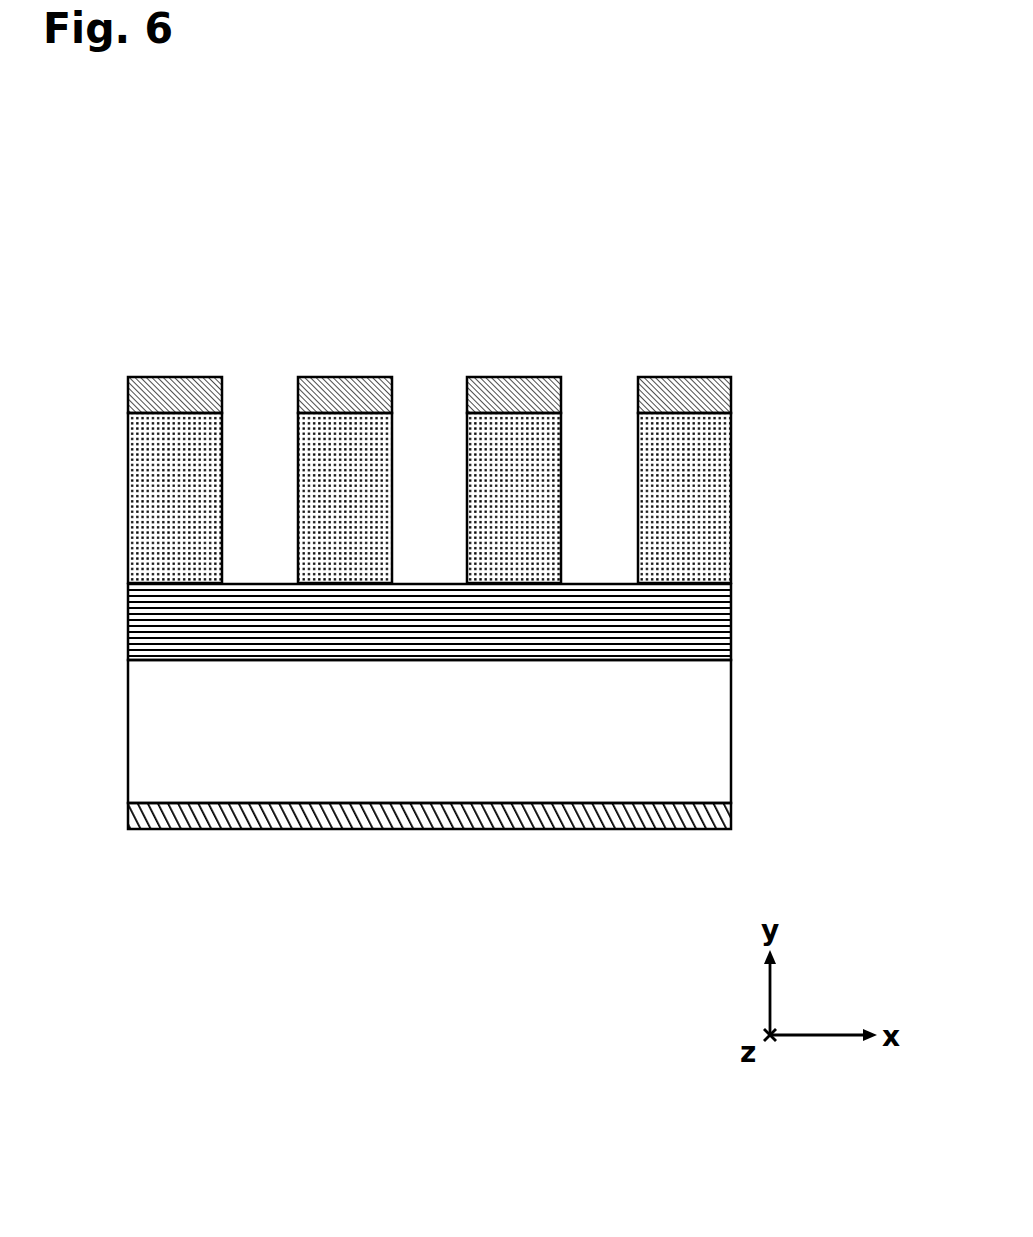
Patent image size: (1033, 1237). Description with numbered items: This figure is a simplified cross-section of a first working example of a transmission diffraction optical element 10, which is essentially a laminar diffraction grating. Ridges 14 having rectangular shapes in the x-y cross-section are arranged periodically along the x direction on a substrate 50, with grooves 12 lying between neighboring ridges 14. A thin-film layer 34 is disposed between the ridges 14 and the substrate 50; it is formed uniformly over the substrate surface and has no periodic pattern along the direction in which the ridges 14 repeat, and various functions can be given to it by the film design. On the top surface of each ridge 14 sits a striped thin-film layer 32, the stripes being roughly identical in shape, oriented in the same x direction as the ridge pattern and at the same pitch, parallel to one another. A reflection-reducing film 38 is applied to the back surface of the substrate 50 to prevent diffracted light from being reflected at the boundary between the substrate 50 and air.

The diffraction optical element 10 is at (405, 270).
The groove 12 is at (575, 405).
The ridge 14 is at (673, 508).
The striped thin-film layer 32 is at (692, 403).
The thin-film layer 34 is at (687, 628).
The substrate 50 is at (350, 763).
The reflection-reducing film 38 is at (593, 828).